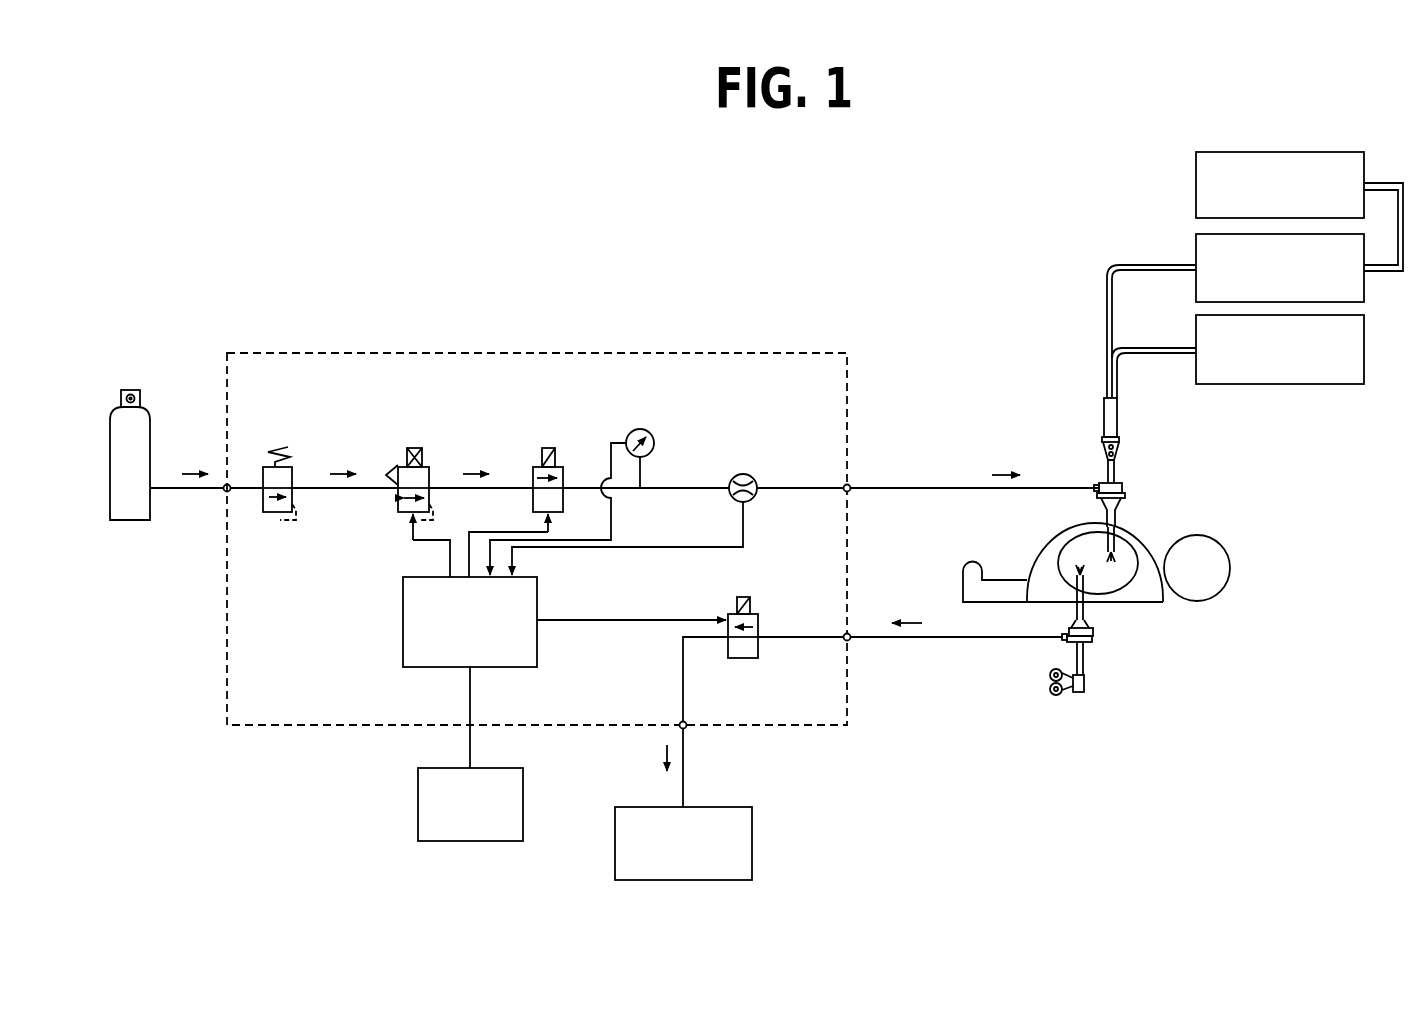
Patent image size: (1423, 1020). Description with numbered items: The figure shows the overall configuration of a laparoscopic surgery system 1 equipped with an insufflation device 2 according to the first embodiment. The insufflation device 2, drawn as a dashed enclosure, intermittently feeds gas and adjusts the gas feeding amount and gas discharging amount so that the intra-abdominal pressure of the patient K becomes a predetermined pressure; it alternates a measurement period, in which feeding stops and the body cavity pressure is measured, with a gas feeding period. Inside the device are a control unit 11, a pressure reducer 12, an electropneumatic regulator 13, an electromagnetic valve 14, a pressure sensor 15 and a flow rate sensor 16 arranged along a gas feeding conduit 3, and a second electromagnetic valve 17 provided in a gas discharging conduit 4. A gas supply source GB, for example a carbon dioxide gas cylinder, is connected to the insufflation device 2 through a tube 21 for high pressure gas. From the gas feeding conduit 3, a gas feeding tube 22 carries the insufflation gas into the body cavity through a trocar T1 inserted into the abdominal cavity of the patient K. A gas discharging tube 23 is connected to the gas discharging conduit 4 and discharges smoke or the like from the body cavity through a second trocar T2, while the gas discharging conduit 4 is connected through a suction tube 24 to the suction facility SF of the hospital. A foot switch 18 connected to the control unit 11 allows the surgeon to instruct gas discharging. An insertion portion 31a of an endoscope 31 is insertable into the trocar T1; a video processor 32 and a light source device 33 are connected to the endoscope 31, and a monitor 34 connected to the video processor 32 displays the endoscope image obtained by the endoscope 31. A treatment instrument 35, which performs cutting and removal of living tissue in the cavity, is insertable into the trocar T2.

The laparoscopic surgery system 1 is at (351, 250).
The insufflation device 2 is at (803, 353).
The gas feeding conduit 3 is at (800, 487).
The gas discharging conduit 4 is at (683, 658).
The control unit 11 is at (403, 620).
The pressure reducer 12 is at (302, 447).
The electropneumatic regulator 13 is at (437, 447).
The electromagnetic valve 14 is at (571, 447).
The pressure sensor 15 is at (650, 431).
The flow rate sensor 16 is at (743, 474).
The electromagnetic valve 17 is at (769, 598).
The foot switch 18 is at (418, 800).
The tube for high pressure gas 21 is at (194, 492).
The gas feeding tube 22 is at (928, 487).
The gas discharging tube 23 is at (923, 641).
The suction tube 24 is at (683, 777).
The endoscope 31 is at (1103, 414).
The insertion portion 31a is at (1106, 476).
The video processor 32 is at (1196, 246).
The light source device 33 is at (1280, 385).
The monitor 34 is at (1196, 161).
The treatment instrument 35 is at (1086, 662).
The gas supply source GB is at (128, 520).
The suction facility SF is at (752, 842).
The trocar T1 is at (1125, 495).
The trocar T2 is at (1093, 630).
The patient K is at (1226, 534).